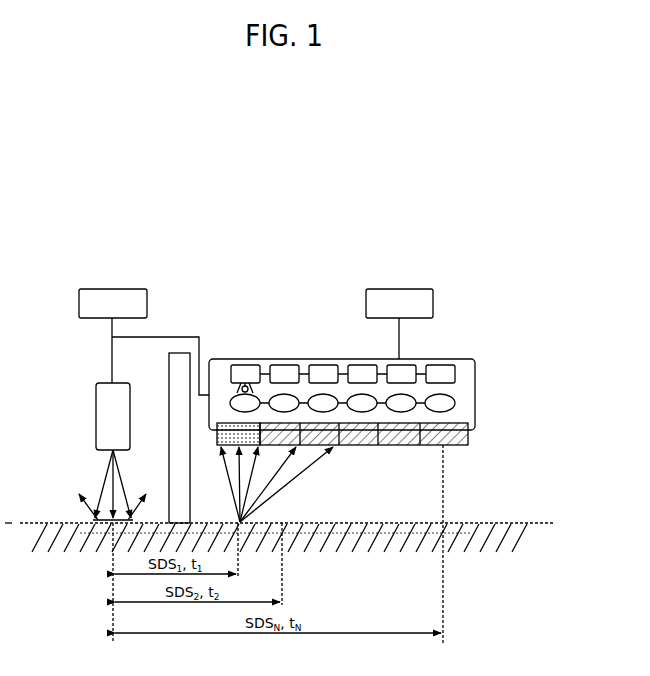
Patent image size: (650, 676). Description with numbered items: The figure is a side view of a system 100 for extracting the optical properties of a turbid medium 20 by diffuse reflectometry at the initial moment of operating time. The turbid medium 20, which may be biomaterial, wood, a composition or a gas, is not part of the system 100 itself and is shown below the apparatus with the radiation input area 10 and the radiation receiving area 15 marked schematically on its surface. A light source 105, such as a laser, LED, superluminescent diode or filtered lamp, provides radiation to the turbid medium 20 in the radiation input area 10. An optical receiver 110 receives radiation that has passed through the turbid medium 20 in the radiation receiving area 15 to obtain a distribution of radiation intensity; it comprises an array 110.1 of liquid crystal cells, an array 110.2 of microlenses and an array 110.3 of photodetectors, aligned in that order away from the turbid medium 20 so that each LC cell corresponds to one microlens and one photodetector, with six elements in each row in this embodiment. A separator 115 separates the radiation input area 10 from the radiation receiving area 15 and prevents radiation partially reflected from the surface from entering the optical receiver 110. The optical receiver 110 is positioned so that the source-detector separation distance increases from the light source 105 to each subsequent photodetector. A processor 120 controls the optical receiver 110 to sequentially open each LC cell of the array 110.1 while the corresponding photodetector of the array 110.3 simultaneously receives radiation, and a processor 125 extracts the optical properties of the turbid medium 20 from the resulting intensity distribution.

The system for extraction of optical properties of a turbid medium 100 is at (469, 252).
The light source 105 is at (96, 417).
The optical receiver 110 is at (366, 429).
The array of LC cells 110.1 is at (468, 431).
The array of microlenses 110.2 is at (475, 402).
The array of photodetectors 110.3 is at (475, 374).
The separator 115 is at (199, 356).
The processor 120 is at (125, 289).
The processor 125 is at (410, 289).
The radiation input area 10 is at (126, 527).
The radiation receiving area 15 is at (330, 534).
The turbid medium 20 is at (502, 546).